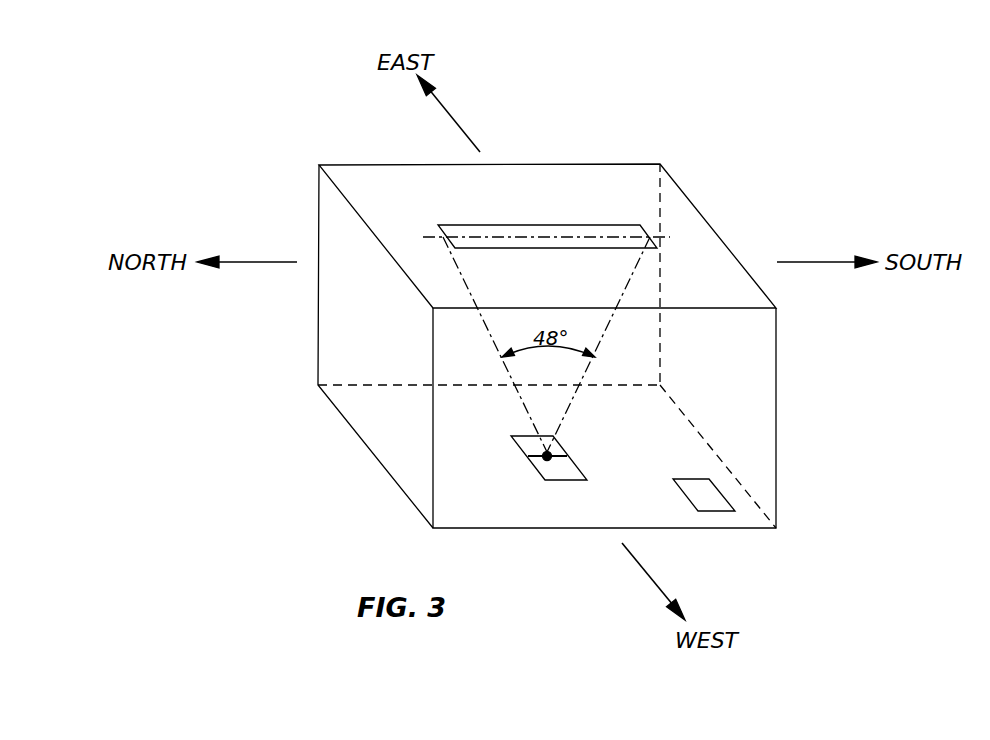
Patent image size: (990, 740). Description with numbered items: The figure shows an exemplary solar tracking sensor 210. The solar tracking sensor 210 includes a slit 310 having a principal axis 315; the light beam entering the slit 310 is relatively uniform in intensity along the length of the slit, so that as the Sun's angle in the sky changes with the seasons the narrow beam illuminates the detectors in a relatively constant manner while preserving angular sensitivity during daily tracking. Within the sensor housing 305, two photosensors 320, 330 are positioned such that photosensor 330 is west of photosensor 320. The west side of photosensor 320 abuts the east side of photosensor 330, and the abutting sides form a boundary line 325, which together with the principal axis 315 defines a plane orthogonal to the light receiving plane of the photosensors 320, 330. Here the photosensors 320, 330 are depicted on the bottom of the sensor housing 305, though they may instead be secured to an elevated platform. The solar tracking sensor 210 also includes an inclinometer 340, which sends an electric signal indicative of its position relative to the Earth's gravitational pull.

The solar tracking sensor 210 is at (709, 76).
The sensor housing 305 is at (704, 217).
The slit 310 is at (444, 224).
The principal axis 315 is at (445, 238).
The photosensor 320 is at (555, 442).
The boundary line 325 is at (545, 458).
The photosensor 330 is at (578, 463).
The inclinometer 340 is at (695, 478).